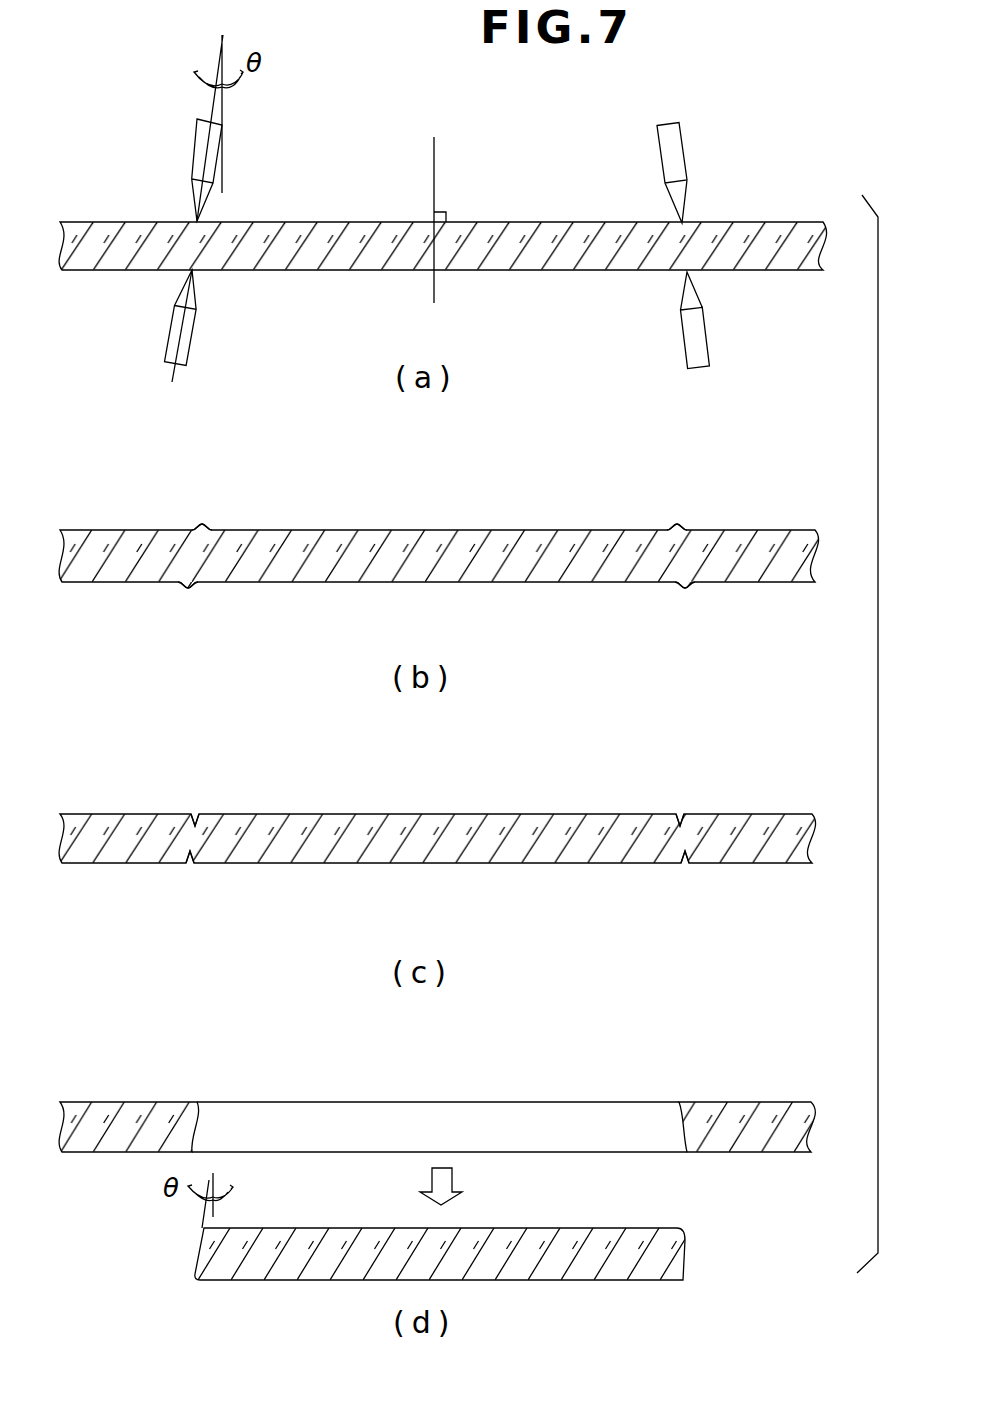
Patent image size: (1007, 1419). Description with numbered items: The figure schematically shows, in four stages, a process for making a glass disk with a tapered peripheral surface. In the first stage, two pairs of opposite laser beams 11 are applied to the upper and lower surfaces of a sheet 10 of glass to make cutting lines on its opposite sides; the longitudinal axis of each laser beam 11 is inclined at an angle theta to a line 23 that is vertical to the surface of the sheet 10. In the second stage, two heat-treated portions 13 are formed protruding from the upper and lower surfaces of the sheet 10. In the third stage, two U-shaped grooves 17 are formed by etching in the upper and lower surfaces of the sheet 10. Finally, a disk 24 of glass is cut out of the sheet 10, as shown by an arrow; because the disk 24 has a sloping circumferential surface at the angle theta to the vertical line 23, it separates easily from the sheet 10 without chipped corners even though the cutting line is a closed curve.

The sheet of glass 10 is at (333, 221).
The laser beam 11 is at (194, 202).
The heat-treated portion 13 is at (205, 530).
The U-shaped groove 17 is at (195, 814).
The vertical line 23 is at (226, 97).
The disk of glass 24 is at (620, 1228).